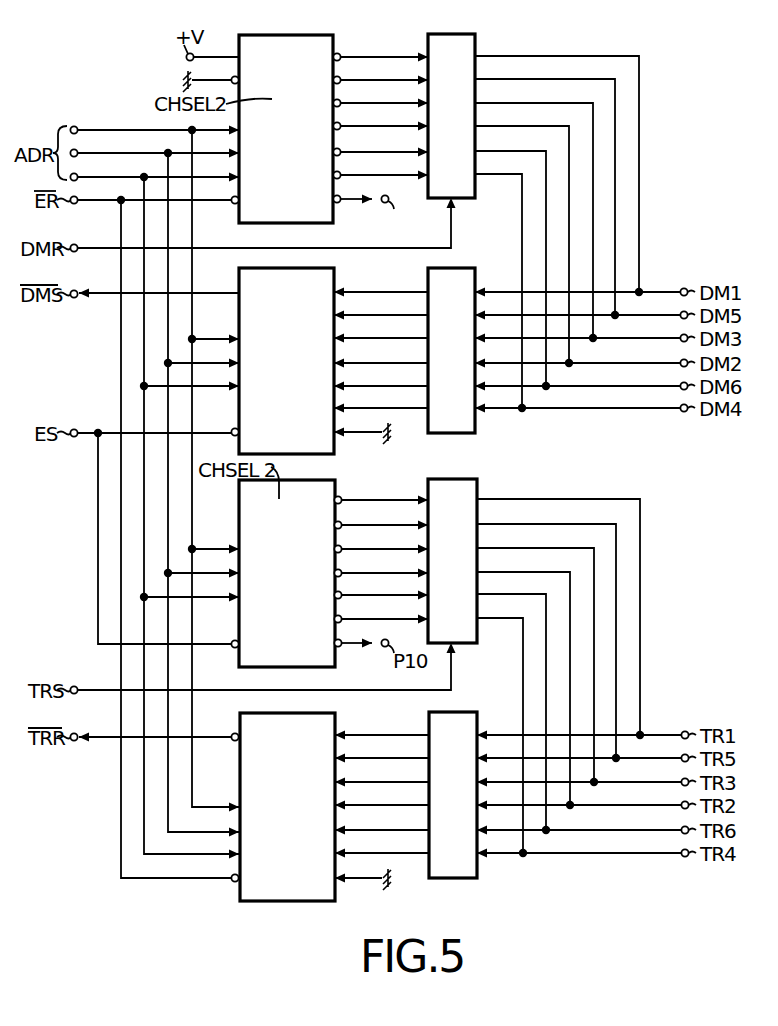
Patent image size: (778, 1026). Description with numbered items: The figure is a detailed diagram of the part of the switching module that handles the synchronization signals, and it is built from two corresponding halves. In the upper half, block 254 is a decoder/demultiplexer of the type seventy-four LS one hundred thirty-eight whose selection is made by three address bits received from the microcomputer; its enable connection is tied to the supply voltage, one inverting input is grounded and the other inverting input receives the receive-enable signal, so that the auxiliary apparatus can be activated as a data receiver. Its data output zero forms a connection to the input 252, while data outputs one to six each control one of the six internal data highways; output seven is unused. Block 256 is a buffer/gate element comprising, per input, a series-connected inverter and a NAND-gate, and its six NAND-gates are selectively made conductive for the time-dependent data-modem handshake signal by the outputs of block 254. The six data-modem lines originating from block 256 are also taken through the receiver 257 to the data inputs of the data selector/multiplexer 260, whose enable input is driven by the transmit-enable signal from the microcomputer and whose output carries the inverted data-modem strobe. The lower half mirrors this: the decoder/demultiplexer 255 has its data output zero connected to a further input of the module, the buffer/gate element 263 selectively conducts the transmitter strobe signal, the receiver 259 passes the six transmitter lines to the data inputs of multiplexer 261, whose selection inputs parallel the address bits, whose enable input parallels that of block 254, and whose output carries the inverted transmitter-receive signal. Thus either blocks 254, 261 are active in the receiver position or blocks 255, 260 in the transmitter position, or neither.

The input 252 is at (373, 216).
The decoder/demultiplexer 254 is at (283, 45).
The decoder/demultiplexer 255 is at (309, 478).
The buffer/gate element 256 is at (439, 42).
The receiver REC2 257 is at (459, 280).
The receiver REC2 259 is at (459, 728).
The data selector/multiplexer 260 is at (293, 280).
The data selector/multiplexer 261 is at (292, 725).
The buffer/gate element 263 is at (461, 487).